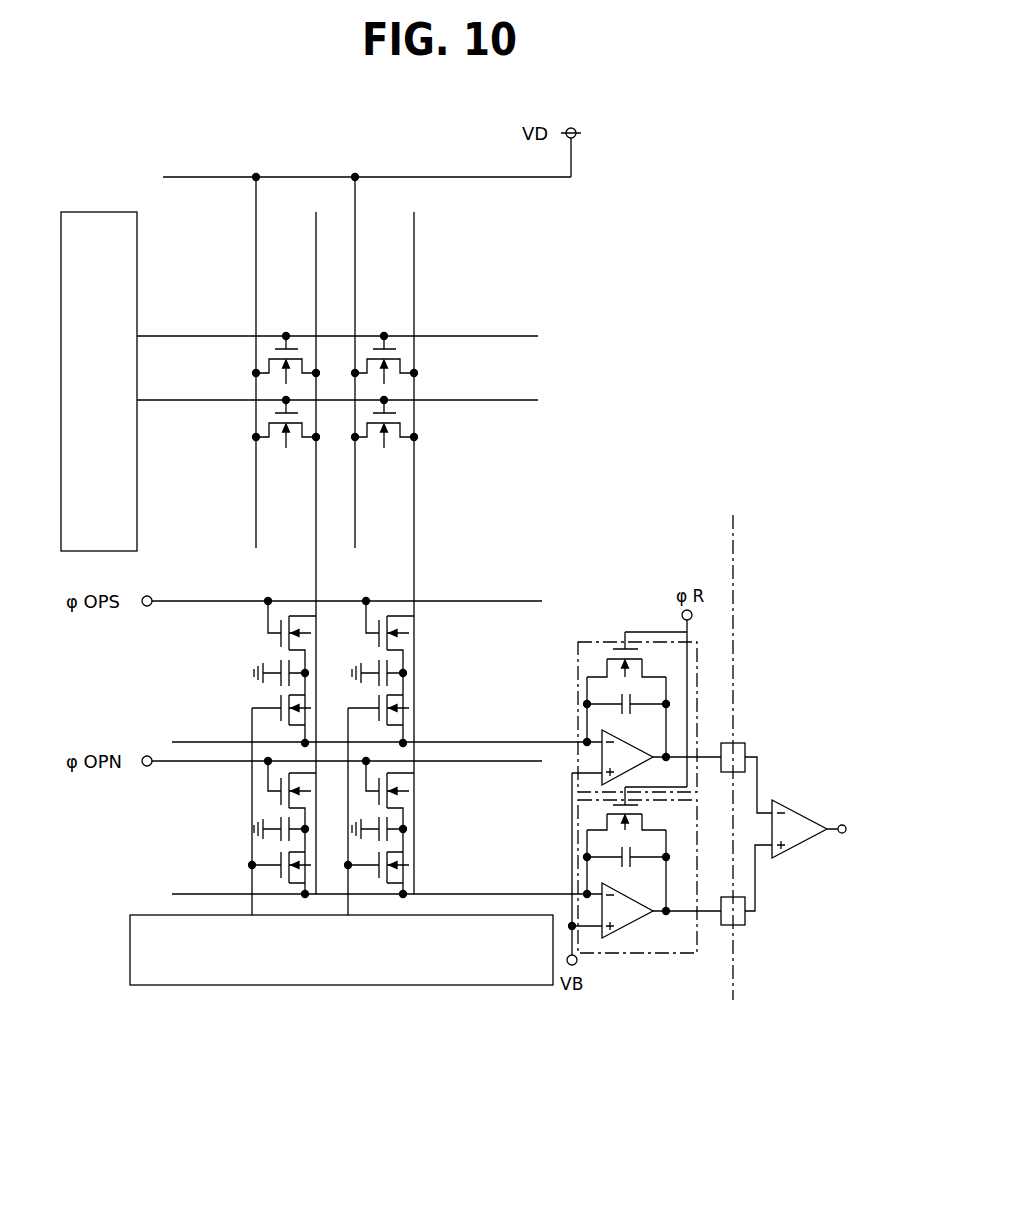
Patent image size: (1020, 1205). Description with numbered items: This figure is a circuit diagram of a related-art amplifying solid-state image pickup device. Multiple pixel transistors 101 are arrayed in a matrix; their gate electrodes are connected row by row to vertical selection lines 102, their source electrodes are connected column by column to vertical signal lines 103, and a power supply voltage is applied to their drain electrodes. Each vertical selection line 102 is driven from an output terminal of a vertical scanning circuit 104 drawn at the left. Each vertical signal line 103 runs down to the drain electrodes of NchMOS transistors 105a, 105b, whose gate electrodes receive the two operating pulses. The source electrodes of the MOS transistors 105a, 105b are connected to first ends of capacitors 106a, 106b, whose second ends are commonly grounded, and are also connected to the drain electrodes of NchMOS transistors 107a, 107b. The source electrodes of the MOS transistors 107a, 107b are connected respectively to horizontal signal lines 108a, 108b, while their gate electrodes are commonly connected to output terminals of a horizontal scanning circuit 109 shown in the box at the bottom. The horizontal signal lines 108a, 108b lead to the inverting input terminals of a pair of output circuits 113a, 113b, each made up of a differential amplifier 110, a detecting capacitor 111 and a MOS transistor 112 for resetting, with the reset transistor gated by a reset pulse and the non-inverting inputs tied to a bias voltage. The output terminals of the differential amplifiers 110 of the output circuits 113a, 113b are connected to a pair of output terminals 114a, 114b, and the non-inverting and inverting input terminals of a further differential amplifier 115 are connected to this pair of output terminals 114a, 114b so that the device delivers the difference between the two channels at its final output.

The pixel transistor 101 is at (416, 377).
The vertical selection line 102 is at (474, 335).
The vertical signal line 103 is at (414, 490).
The vertical scanning circuit 104 is at (83, 212).
The NchMOS transistor 105a is at (410, 631).
The NchMOS transistor 105b is at (410, 789).
The capacitor 106a is at (404, 668).
The capacitor 106b is at (404, 825).
The NchMOS transistor 107a is at (410, 720).
The NchMOS transistor 107b is at (410, 877).
The horizontal signal line 108a is at (197, 742).
The horizontal signal line 108b is at (200, 894).
The horizontal scanning circuit 109 is at (502, 945).
The differential amplifier 110 is at (604, 743).
The detecting capacitor 111 is at (585, 680).
The MOS transistor for resetting 112 is at (650, 667).
The output circuit 113a is at (659, 668).
The output circuit 113b is at (650, 954).
The output terminal 114a is at (745, 743).
The output terminal 114b is at (745, 922).
The differential amplifier 115 is at (797, 817).